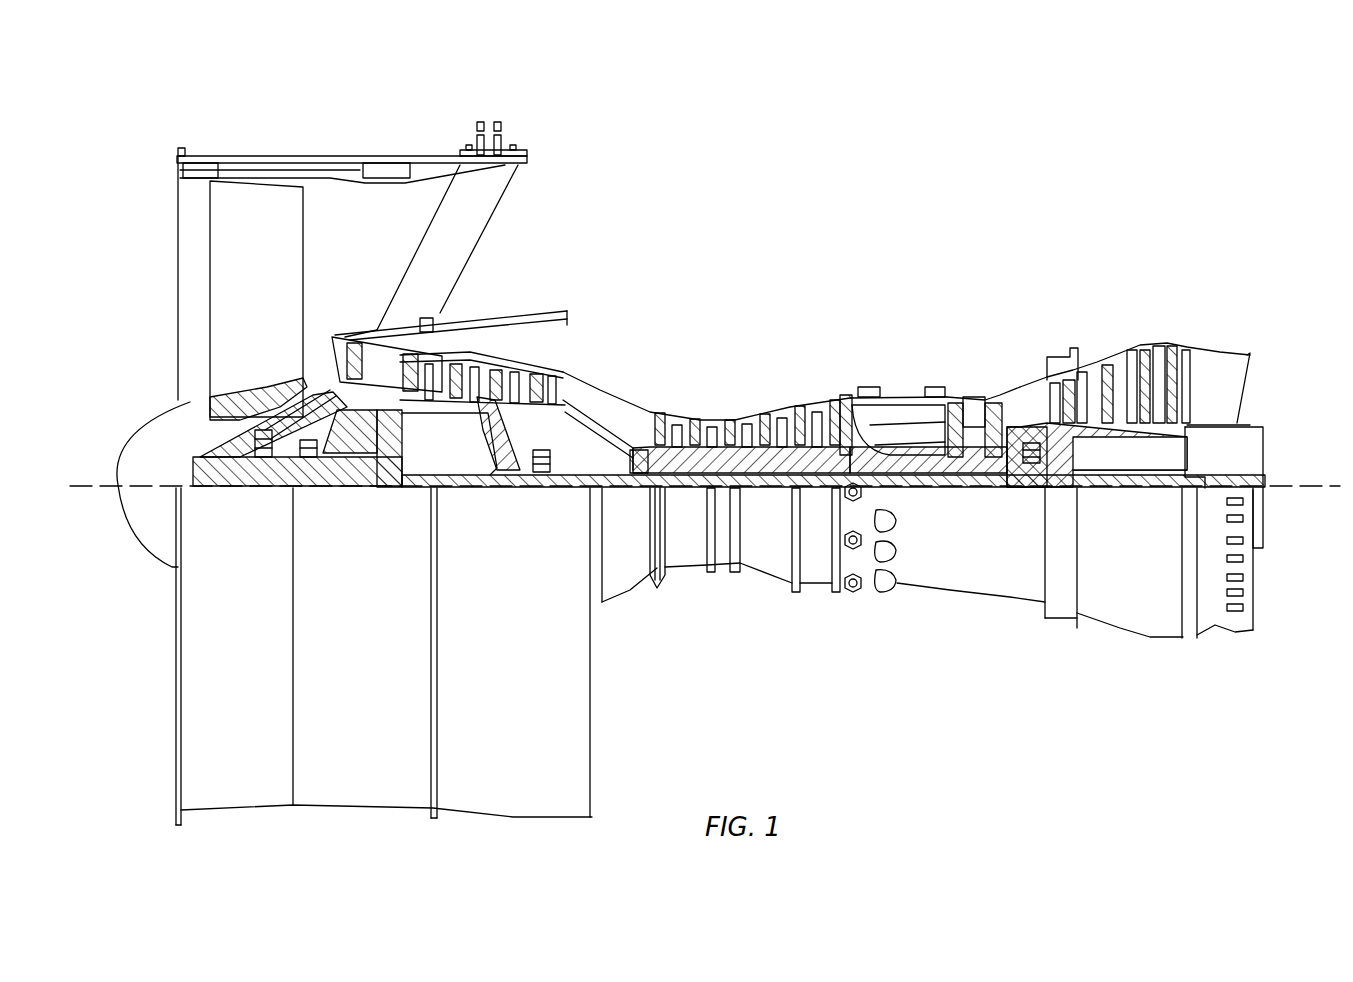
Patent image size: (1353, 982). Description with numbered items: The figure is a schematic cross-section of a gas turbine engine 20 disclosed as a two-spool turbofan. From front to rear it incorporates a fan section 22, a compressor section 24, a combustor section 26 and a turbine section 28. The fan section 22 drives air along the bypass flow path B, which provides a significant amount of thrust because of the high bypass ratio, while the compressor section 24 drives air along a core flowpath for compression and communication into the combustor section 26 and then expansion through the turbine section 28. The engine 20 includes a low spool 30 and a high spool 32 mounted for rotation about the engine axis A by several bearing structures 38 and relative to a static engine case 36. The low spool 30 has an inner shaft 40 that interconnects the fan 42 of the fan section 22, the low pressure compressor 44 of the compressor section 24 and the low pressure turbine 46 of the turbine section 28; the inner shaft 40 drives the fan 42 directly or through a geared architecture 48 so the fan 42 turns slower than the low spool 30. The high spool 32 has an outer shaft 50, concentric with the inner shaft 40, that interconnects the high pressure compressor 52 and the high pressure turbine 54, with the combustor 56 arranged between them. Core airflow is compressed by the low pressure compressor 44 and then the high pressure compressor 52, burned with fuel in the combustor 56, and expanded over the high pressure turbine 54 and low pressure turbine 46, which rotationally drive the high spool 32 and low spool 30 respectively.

The gas turbine engine 20 is at (940, 194).
The fan section 22 is at (433, 134).
The compressor section 24 is at (847, 290).
The combustor section 26 is at (958, 290).
The turbine section 28 is at (1188, 290).
The low spool 30 is at (770, 498).
The high spool 32 is at (813, 450).
The static engine case 36 is at (818, 592).
The bearing structures 38 is at (268, 460).
The inner shaft 40 is at (618, 490).
The fan 42 is at (275, 336).
The low pressure compressor 44 is at (513, 378).
The low pressure turbine 46 is at (1125, 345).
The geared architecture 48 is at (387, 463).
The outer shaft 50 is at (907, 477).
The high pressure compressor 52 is at (753, 450).
The high pressure turbine 54 is at (975, 400).
The combustor 56 is at (898, 423).
The engine axis A is at (1310, 487).
The bypass flow path B is at (360, 244).